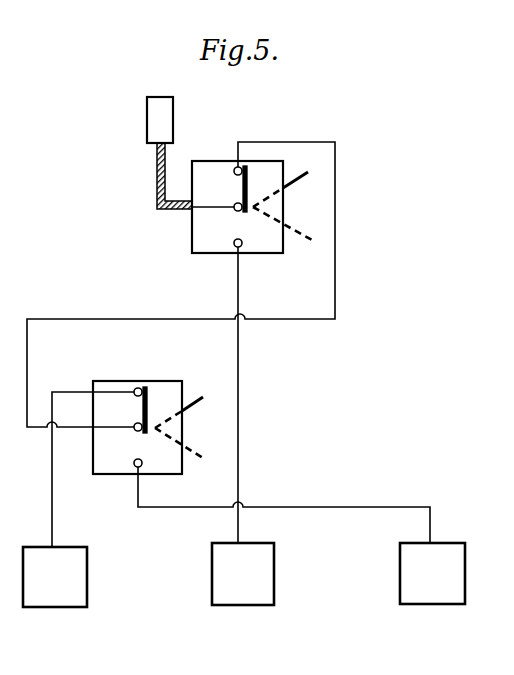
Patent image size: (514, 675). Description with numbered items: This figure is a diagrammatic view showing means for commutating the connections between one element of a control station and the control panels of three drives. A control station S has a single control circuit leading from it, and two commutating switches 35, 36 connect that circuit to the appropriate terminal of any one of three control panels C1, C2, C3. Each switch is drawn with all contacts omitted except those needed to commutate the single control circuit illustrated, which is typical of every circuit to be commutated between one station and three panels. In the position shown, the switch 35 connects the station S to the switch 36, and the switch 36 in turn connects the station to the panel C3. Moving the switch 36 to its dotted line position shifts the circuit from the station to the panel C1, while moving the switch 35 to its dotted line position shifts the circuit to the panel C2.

The control station S is at (173, 120).
The commutating switch 35 is at (231, 147).
The commutating switch 36 is at (170, 381).
The control panel C1 is at (432, 573).
The control panel C2 is at (243, 574).
The control panel C3 is at (55, 577).